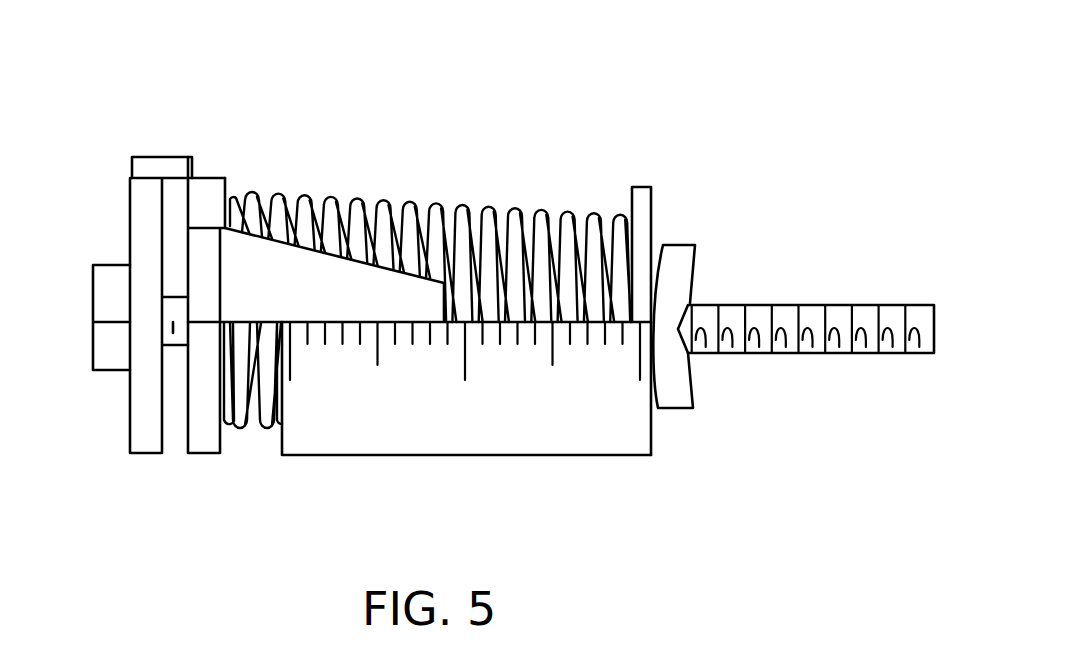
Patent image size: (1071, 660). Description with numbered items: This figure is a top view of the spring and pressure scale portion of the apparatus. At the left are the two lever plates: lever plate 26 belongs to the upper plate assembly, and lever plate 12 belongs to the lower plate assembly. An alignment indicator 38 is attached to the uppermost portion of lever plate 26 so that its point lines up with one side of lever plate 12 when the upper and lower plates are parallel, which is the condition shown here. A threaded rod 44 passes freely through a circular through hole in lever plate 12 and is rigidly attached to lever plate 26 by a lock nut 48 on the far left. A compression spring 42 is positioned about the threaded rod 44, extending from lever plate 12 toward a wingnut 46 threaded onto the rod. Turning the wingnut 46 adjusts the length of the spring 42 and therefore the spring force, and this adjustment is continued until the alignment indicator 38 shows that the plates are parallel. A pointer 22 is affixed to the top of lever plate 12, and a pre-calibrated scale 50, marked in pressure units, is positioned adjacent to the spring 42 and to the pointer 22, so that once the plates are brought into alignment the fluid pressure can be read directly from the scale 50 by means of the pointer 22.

The lever plate 12 is at (197, 453).
The pointer 22 is at (444, 284).
The lever plate 26 is at (130, 437).
The alignment indicator 38 is at (190, 158).
The compression spring 42 is at (433, 204).
The threaded rod 44 is at (852, 353).
The wingnut 46 is at (683, 243).
The lock nut 48 is at (105, 265).
The pre-calibrated scale 50 is at (618, 457).